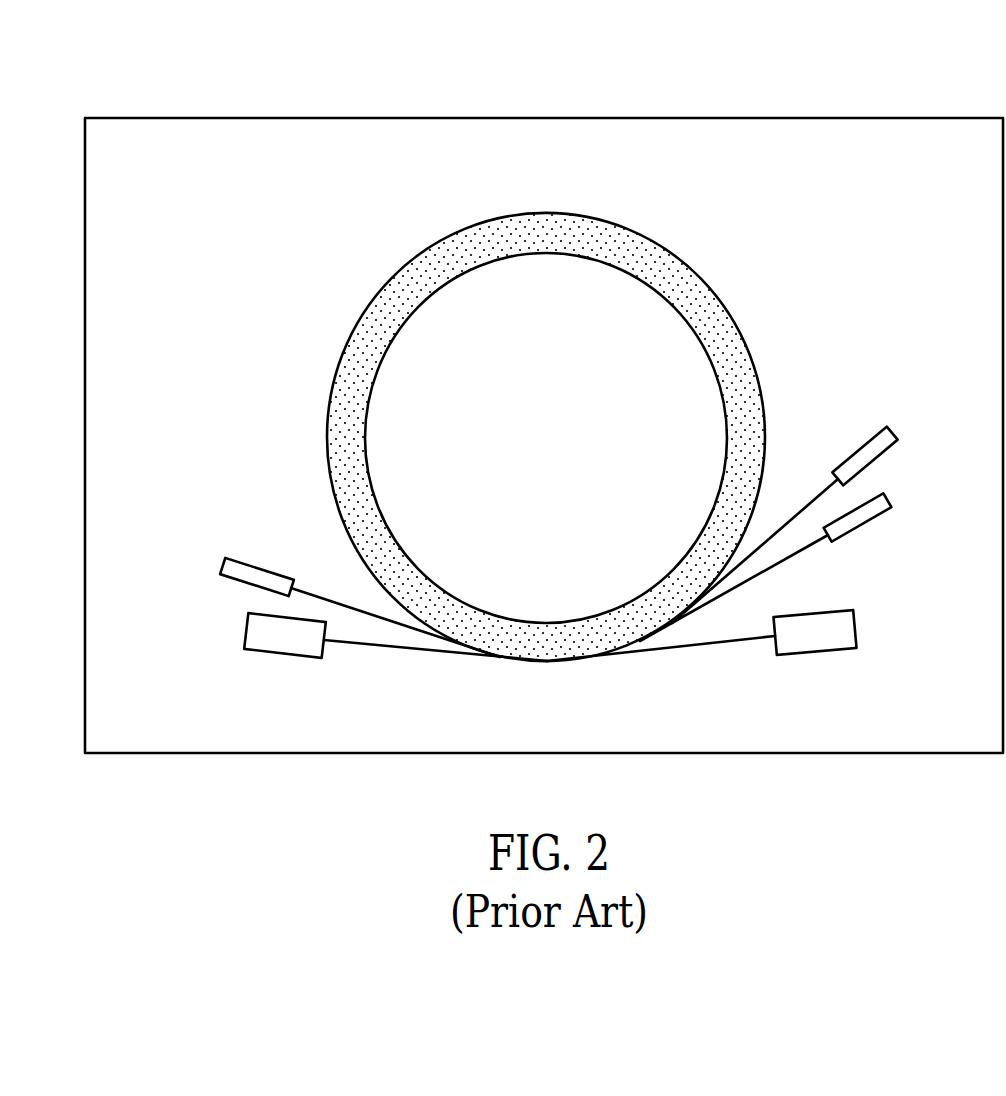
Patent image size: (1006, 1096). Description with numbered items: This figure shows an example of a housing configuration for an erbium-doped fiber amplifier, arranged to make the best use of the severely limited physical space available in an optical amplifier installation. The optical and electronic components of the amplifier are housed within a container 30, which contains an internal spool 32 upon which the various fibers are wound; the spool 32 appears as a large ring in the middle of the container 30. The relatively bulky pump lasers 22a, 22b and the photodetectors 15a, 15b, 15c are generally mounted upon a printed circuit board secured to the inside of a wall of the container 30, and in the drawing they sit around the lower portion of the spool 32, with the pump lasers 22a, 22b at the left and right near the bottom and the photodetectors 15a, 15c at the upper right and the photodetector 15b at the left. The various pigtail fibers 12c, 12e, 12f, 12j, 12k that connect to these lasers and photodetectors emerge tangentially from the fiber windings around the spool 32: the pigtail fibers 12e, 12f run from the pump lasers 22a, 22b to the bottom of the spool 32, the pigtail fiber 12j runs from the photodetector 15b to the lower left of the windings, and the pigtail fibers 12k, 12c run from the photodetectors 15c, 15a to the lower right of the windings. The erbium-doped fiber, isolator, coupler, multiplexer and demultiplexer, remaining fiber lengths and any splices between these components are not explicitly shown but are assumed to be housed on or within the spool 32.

The container 30 is at (128, 118).
The internal spool 32 is at (708, 290).
The pigtail fiber 12j is at (333, 600).
The pigtail fiber 12k is at (799, 513).
The pigtail fiber 12c is at (788, 557).
The pigtail fiber 12e is at (390, 648).
The pigtail fiber 12f is at (690, 648).
The photodetector 15a is at (888, 501).
The photodetector 15b is at (223, 566).
The photodetector 15c is at (893, 427).
The pump laser 22a is at (247, 653).
The pump laser 22b is at (857, 648).